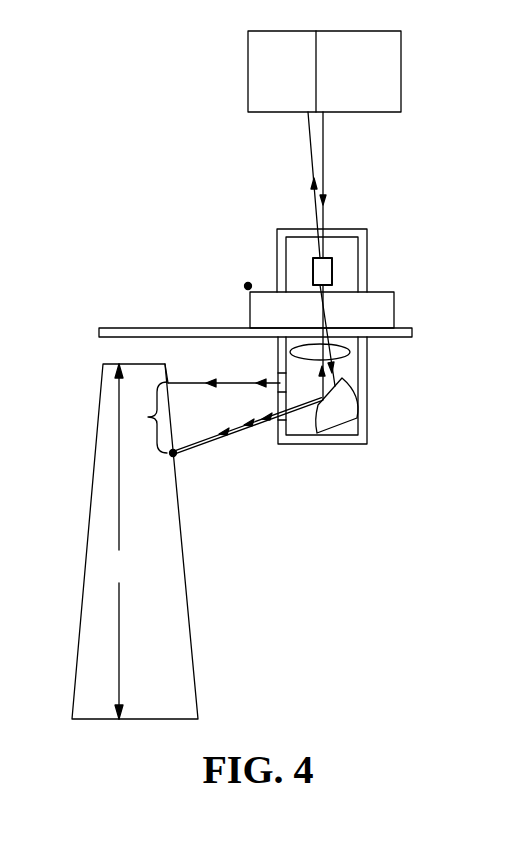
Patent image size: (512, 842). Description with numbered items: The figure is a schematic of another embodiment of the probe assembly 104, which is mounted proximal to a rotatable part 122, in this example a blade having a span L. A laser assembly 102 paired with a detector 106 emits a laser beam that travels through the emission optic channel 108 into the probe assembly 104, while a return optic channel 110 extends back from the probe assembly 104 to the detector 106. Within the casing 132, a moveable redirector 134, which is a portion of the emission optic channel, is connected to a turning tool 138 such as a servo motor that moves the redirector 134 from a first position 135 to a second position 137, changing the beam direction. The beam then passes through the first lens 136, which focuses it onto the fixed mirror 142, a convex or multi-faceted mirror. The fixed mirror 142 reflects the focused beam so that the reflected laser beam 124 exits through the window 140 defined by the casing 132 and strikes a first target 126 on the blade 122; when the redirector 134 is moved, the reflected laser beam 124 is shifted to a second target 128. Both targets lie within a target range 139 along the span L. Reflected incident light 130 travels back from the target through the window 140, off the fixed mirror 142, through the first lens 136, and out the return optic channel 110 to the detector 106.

The laser assembly 102 is at (403, 76).
The detector 106 is at (247, 87).
The emission optic channel 108 is at (323, 183).
The return optic channel 110 is at (308, 136).
The first position 135 is at (285, 240).
The turning tool 138 is at (313, 273).
The casing 132 is at (313, 265).
The redirector 134 is at (322, 270).
The second position 137 is at (332, 268).
The window 140 is at (280, 375).
The probe assembly 104 is at (373, 279).
The first lens 136 is at (350, 352).
The fixed mirror 142 is at (350, 390).
The reflected incident light 130 is at (243, 422).
The reflected laser beam 124 is at (197, 383).
The second target 128 is at (168, 383).
The rotatable part 122 is at (93, 638).
The target range 139 is at (147, 417).
The first target 126 is at (175, 455).